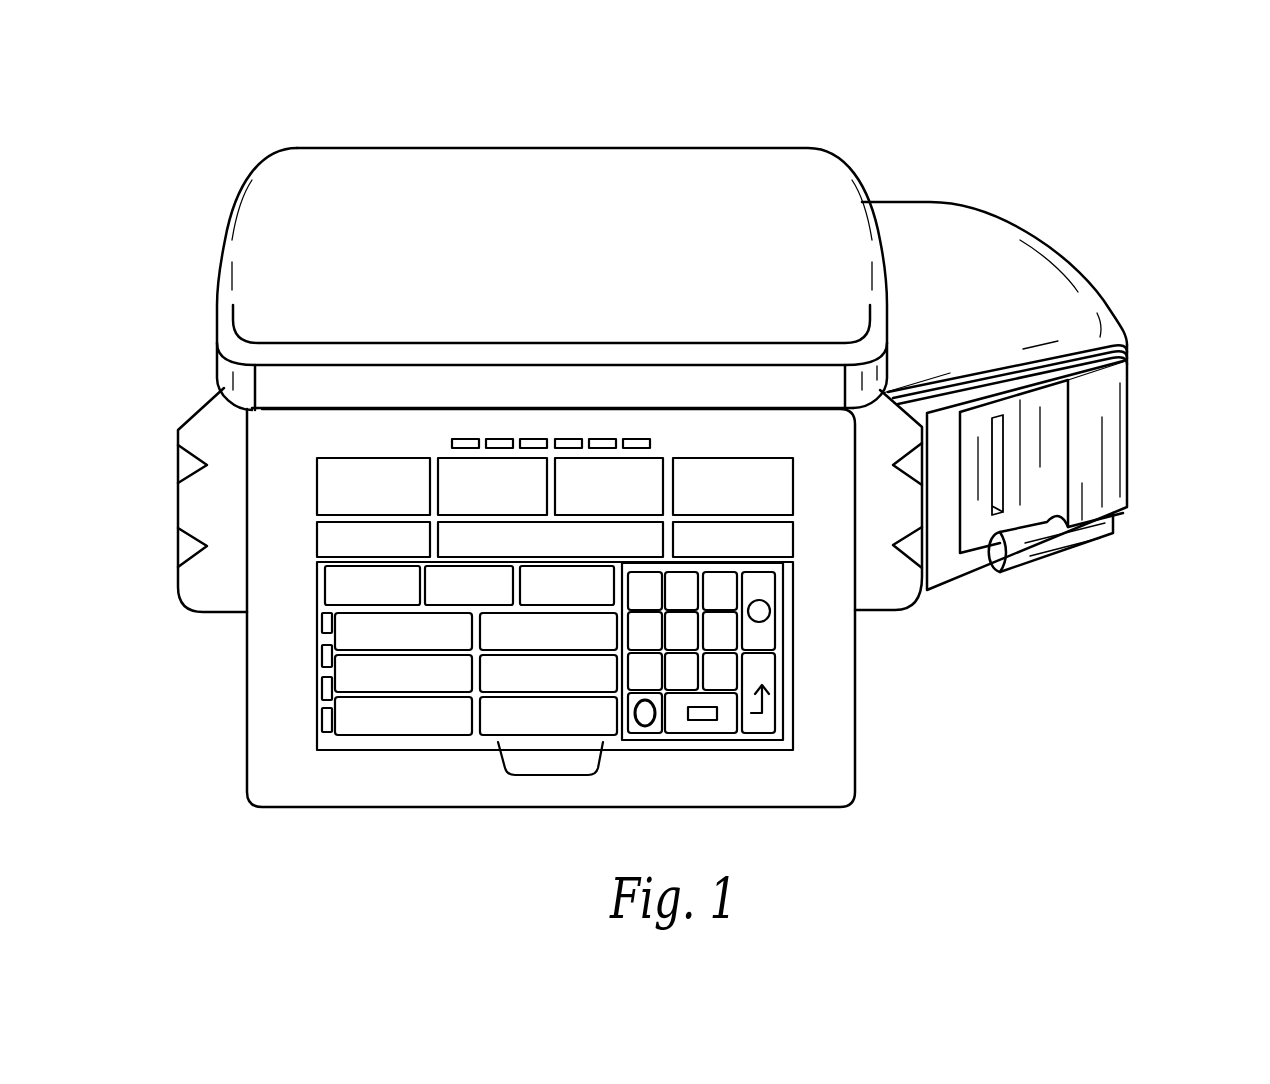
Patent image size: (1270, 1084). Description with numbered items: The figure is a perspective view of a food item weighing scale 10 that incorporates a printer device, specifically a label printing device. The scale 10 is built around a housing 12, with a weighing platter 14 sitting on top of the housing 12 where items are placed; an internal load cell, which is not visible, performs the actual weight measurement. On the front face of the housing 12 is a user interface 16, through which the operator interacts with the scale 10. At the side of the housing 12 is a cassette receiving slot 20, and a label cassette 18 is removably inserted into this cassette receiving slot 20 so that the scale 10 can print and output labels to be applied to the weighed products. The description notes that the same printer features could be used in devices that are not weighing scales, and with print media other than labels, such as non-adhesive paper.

The food item weighing scale 10 is at (975, 131).
The housing 12 is at (972, 262).
The weighing platter 14 is at (582, 195).
The user interface 16 is at (300, 667).
The label cassette 18 is at (1073, 541).
The cassette receiving slot 20 is at (1142, 350).